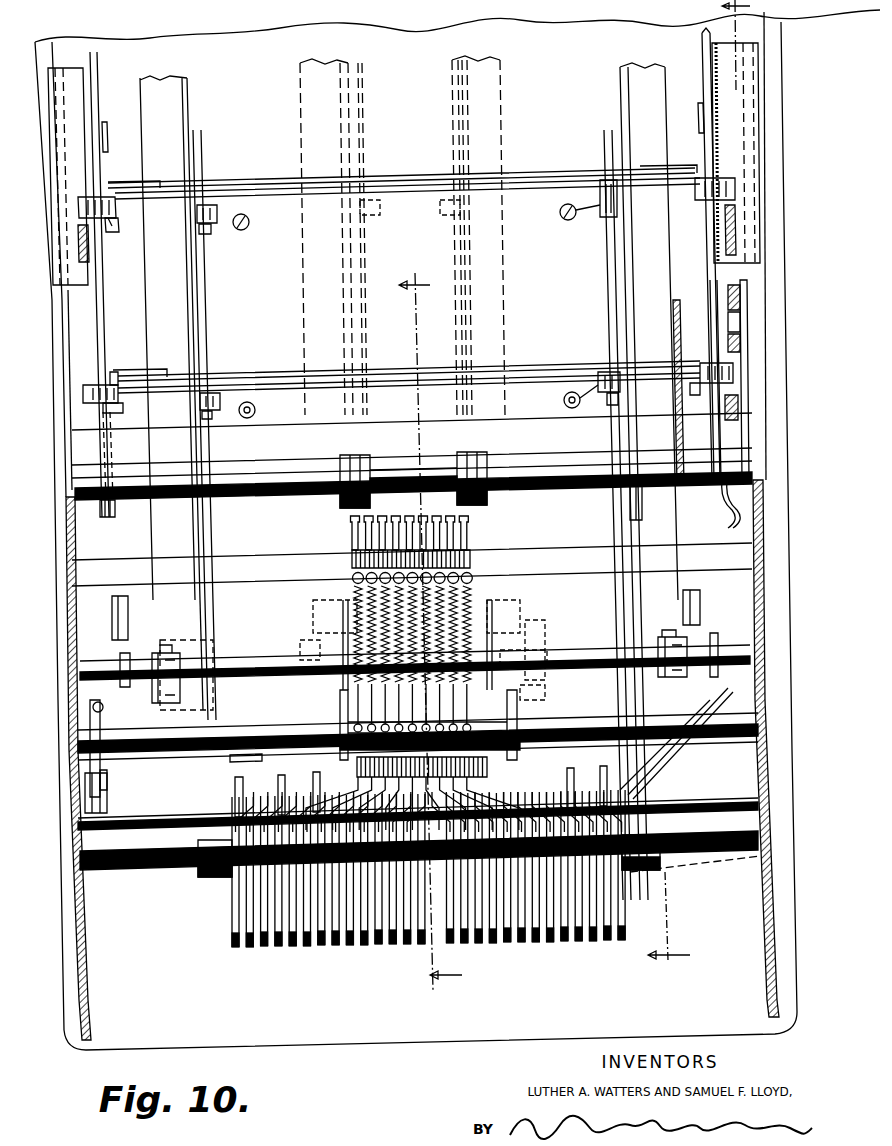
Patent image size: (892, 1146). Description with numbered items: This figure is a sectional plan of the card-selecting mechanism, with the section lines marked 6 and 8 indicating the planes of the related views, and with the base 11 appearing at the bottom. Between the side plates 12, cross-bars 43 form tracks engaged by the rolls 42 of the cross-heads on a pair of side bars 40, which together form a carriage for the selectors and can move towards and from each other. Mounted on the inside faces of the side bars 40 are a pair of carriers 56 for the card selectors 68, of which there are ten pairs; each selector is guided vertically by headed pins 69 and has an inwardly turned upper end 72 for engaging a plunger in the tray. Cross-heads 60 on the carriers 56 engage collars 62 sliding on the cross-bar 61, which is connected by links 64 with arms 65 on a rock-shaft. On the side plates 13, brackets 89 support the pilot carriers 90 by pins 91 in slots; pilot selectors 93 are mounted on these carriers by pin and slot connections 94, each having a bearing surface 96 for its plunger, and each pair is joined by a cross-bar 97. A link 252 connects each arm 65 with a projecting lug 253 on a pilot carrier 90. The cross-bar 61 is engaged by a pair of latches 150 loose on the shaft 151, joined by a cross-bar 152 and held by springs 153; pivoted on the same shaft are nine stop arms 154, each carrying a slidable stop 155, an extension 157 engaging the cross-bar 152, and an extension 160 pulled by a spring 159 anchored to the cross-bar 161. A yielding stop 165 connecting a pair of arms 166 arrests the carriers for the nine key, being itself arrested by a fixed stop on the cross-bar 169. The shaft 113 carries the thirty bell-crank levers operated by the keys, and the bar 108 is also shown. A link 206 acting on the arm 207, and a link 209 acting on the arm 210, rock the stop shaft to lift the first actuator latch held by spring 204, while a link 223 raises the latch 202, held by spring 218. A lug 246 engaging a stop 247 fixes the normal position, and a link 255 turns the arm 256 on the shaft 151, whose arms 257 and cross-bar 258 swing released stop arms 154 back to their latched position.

The section line 6- 6 is at (402, 523).
The section line 8- 8 is at (747, 45).
The base 11 is at (425, 1038).
The side plates 12 is at (72, 725).
The side plates 13 is at (64, 335).
The side bars 40 is at (155, 288).
The rolls 42 is at (153, 760).
The cross-bars 43 is at (245, 755).
The side bars or carriers 56 is at (203, 522).
The cross-heads 60 is at (162, 650).
The cross-bar 61 is at (262, 662).
The collars 62 is at (128, 655).
The links 64 is at (116, 602).
The arms 65 is at (108, 518).
The selectors 68 is at (206, 236).
The headed pins 69 is at (212, 228).
The upper ends of selectors 72 is at (208, 205).
The brackets 89 is at (96, 172).
The side bars or carriers 90 is at (100, 320).
The pins 91 is at (80, 245).
The pilot selectors 93 is at (108, 232).
The pin and slot connection 94 is at (112, 222).
The bearing surface 96 is at (80, 205).
The cross-bar 97 is at (530, 178).
The bar 108 is at (208, 820).
The shaft 113 is at (745, 858).
The latches 150 is at (343, 608).
The shaft 151 is at (223, 735).
The cross-bar 152 is at (517, 722).
The springs 153 is at (357, 770).
The stop arms 154 is at (355, 540).
The stop 155 is at (390, 522).
The extension 157 is at (280, 815).
The spring 159 is at (355, 578).
The extension 160 is at (340, 745).
The cross-bar 161 is at (255, 560).
The yielding stop 165 is at (470, 505).
The arms 166 is at (352, 456).
The cross-bar 169 is at (400, 428).
The latch 202 is at (730, 345).
The spring 204 is at (749, 397).
The link 206 is at (735, 298).
The arm 207 is at (740, 322).
The link 209 is at (550, 657).
The arm 210 is at (642, 505).
The spring 218 is at (725, 403).
The link 223 is at (650, 782).
The lug 246 is at (95, 700).
The stop 247 is at (104, 710).
The link 252 is at (112, 432).
The projecting lug 253 is at (108, 138).
The link 255 is at (108, 798).
The arm 256 is at (100, 770).
The arms 257 is at (300, 670).
The cross-bar 258 is at (530, 660).